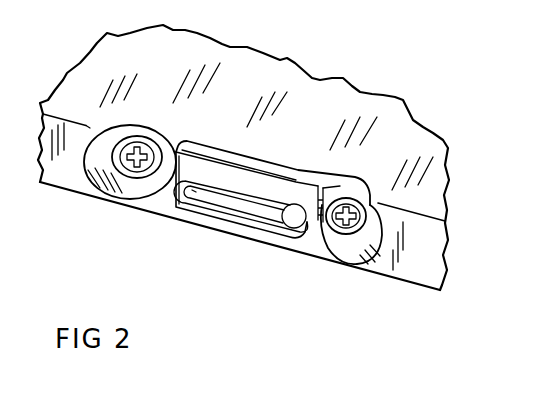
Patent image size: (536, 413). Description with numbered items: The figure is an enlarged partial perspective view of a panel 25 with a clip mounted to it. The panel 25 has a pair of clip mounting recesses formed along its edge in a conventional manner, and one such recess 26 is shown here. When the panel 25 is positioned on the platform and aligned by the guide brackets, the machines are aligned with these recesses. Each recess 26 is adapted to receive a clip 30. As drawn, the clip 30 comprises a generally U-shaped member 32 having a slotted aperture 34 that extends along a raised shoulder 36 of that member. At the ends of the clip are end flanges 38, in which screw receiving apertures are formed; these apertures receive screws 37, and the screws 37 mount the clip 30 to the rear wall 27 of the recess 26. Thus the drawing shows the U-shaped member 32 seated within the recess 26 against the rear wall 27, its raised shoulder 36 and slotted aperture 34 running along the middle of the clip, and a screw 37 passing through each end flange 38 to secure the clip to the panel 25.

The panel 25 is at (172, 89).
The clip mounting recess 26 is at (102, 131).
The rear wall 27 is at (265, 180).
The clip 30 is at (227, 170).
The U-shaped member 32 is at (309, 186).
The slotted aperture 34 is at (197, 194).
The raised shoulder 36 is at (252, 222).
The screw 37 is at (133, 174).
The end flange 38 is at (166, 171).